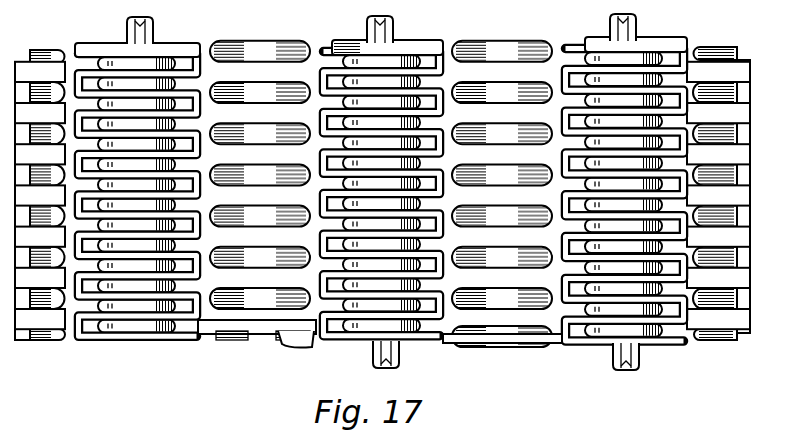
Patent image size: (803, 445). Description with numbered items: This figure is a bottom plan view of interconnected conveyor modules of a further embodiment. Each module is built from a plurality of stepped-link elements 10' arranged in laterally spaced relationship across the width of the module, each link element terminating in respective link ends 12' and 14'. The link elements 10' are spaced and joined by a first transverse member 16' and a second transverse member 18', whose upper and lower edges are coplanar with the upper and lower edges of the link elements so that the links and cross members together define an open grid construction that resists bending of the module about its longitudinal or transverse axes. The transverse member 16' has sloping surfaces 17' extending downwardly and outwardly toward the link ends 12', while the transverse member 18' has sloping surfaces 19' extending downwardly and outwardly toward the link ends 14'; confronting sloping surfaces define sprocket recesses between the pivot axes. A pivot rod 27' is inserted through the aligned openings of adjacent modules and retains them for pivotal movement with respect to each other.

The stepped-link element 10' is at (382, 192).
The link end 12' is at (125, 176).
The link end 14' is at (394, 176).
The first transverse member 16' is at (251, 343).
The sloping surface 17' is at (260, 45).
The second transverse member 18' is at (316, 350).
The sloping surface 19' is at (268, 167).
The pivot rod 27' is at (406, 354).